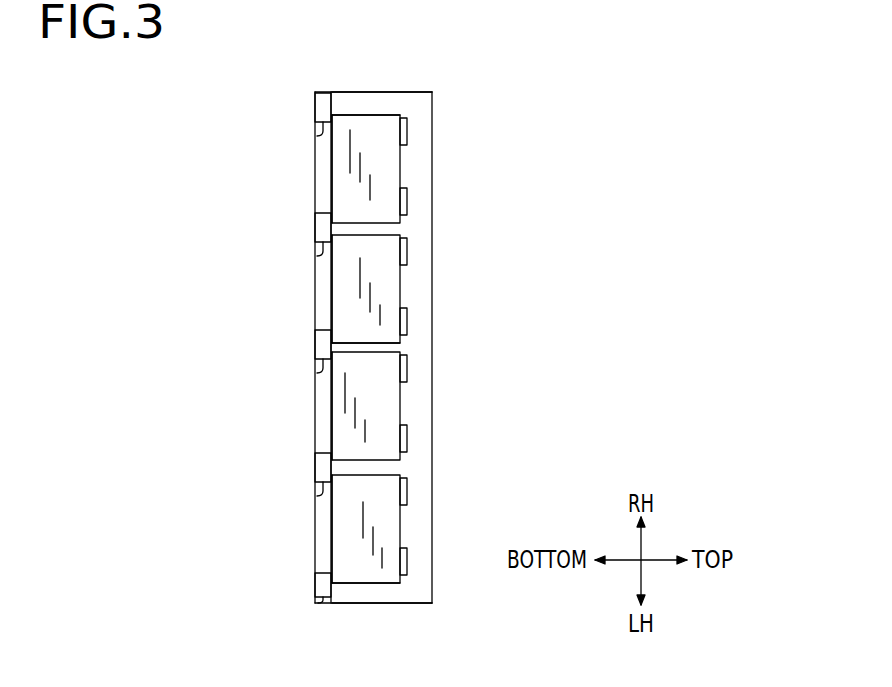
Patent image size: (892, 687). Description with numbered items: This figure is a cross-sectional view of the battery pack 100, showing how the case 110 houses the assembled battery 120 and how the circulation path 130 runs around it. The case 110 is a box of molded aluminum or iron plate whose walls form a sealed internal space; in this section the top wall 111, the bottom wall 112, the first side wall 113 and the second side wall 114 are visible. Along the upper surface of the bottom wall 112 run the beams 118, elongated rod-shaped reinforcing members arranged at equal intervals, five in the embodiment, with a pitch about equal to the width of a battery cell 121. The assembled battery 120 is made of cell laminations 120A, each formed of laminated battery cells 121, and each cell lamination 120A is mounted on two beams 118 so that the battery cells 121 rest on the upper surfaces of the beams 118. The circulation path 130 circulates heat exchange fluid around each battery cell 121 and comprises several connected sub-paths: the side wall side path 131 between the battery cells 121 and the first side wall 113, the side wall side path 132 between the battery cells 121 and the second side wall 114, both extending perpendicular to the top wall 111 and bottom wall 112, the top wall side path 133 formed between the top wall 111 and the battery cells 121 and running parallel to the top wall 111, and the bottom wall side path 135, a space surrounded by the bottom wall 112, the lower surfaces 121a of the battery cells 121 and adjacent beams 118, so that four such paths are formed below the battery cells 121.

The battery pack 100 is at (297, 100).
The case 110 is at (323, 92).
The top wall 111 is at (432, 317).
The bottom wall 112 is at (315, 316).
The first side wall 113 is at (343, 605).
The second side wall 114 is at (340, 92).
The beam 118 is at (317, 136).
The assembled battery 120 is at (347, 112).
The cell lamination 120A is at (368, 112).
The battery cell 121 is at (392, 164).
The lower surface of battery cell 121a is at (328, 152).
The circulation path 130 is at (360, 588).
The side wall side path 131 is at (378, 591).
The side wall side path 132 is at (387, 100).
The top wall side path 133 is at (415, 347).
The bottom wall side path 135 is at (322, 183).